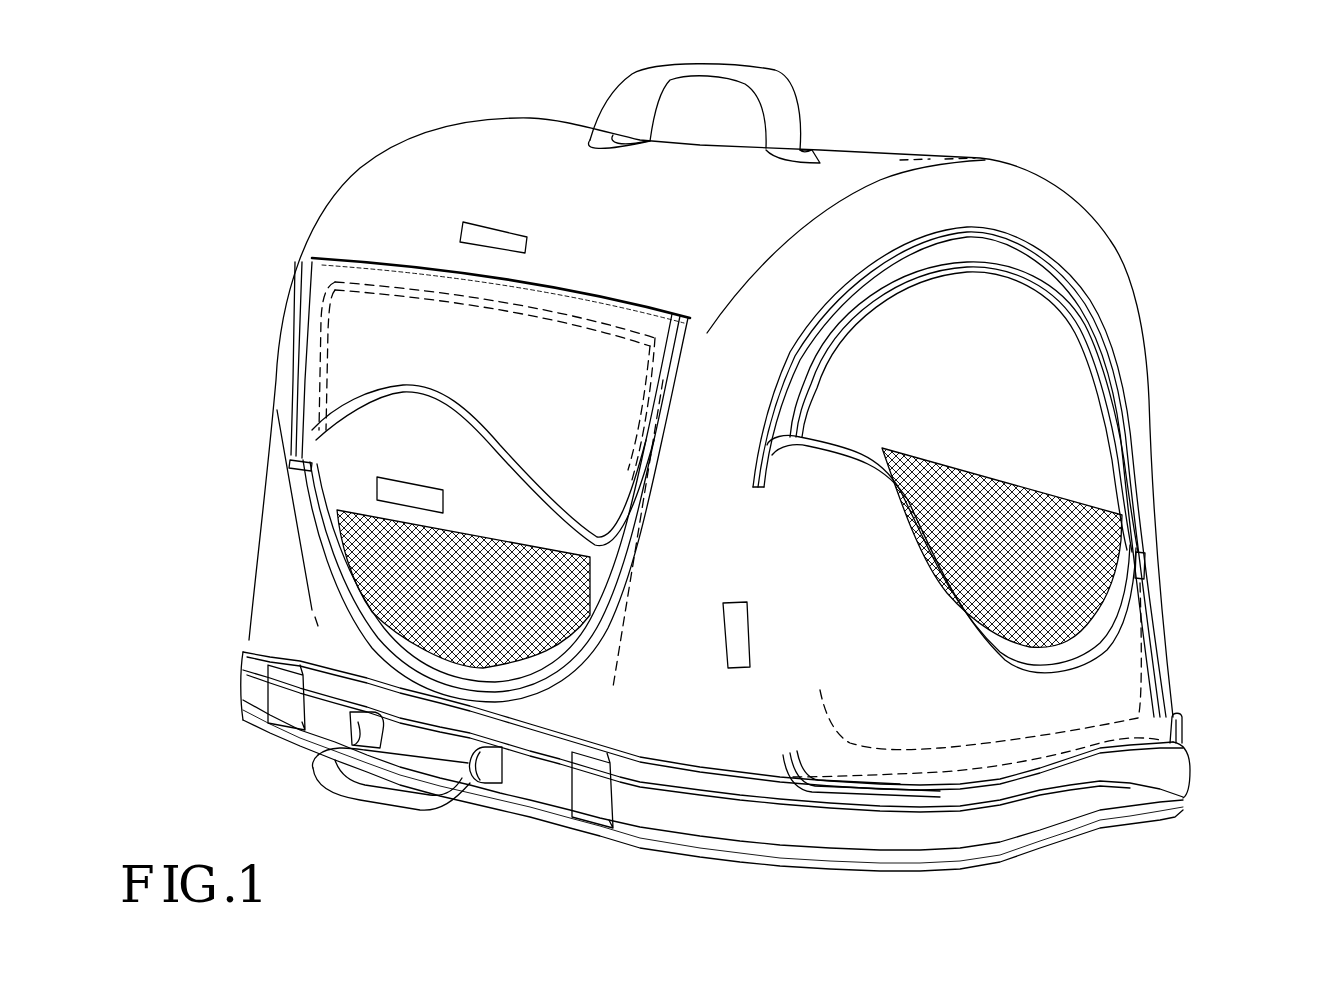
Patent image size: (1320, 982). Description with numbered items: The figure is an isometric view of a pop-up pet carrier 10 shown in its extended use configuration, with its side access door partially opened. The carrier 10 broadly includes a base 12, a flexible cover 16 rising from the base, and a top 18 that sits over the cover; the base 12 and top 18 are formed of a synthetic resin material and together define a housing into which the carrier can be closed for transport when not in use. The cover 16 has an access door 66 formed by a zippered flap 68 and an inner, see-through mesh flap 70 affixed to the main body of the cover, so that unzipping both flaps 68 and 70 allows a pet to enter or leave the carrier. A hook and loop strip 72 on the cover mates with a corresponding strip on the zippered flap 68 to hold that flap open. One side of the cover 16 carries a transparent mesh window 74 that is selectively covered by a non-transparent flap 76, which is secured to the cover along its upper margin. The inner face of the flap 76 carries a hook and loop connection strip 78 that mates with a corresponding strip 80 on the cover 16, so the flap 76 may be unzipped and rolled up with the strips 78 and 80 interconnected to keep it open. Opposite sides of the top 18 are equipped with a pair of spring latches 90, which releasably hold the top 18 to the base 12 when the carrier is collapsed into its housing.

The pop-up pet carrier 10 is at (1207, 196).
The base 12 is at (538, 799).
The flexible cover 16 is at (1055, 167).
The top 18 is at (710, 890).
The access door 66 is at (1236, 372).
The zippered flap 68 is at (1118, 677).
The mesh flap 70 is at (1102, 523).
The strip 72 is at (738, 635).
The mesh window 74 is at (388, 566).
The flap 76 is at (390, 363).
The hook and loop connection strip 78 is at (392, 497).
The strip 80 is at (530, 235).
The spring latches 90 is at (283, 700).